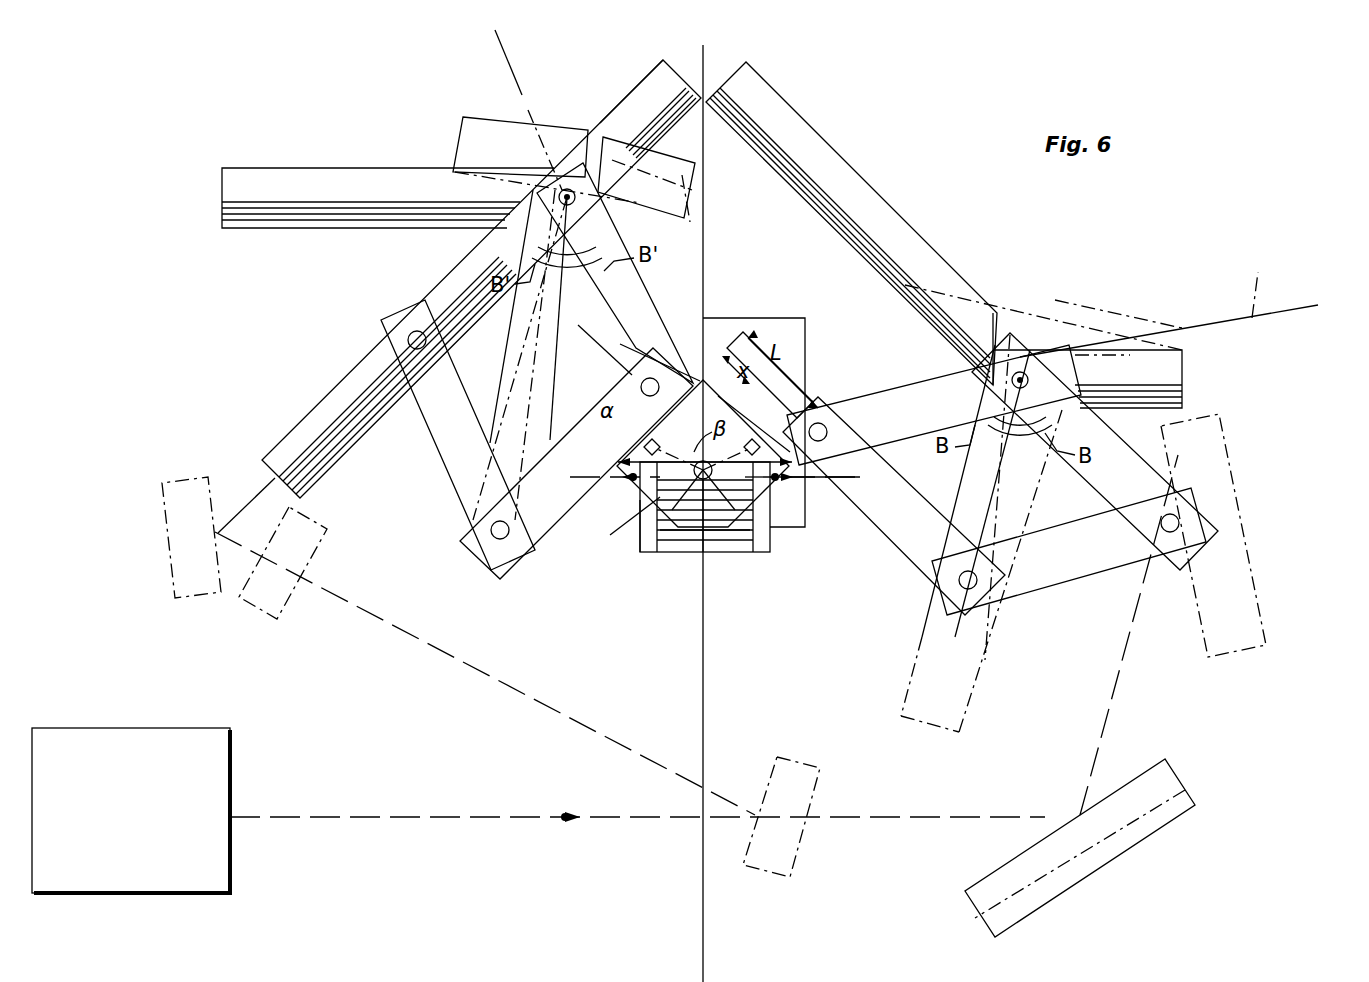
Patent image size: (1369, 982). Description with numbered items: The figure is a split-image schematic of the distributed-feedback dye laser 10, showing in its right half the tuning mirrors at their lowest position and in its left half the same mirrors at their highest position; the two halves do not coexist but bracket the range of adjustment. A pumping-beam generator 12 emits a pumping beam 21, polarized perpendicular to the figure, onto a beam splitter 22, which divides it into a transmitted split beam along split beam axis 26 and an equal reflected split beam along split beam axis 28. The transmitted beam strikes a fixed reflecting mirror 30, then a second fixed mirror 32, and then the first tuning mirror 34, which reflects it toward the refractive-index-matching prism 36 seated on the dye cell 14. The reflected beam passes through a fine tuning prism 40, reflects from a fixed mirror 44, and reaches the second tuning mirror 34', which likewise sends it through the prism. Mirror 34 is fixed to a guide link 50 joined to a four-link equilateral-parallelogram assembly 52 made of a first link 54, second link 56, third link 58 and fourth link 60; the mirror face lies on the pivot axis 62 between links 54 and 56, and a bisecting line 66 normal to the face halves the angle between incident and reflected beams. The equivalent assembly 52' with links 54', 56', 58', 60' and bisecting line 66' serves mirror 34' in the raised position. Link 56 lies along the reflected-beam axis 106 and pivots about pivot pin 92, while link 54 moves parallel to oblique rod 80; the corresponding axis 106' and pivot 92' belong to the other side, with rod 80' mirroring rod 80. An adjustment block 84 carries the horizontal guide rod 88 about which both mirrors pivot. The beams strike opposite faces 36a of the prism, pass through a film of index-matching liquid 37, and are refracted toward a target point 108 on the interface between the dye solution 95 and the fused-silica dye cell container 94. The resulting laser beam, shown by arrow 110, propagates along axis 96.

The distributed-feedback dye laser 10 is at (109, 206).
The pumping-beam generator 12 is at (124, 726).
The dye cell 14 is at (792, 596).
The pumping beam 21 is at (680, 815).
The beam splitter 22 is at (795, 868).
The split beam axis 26 is at (1115, 693).
The split beam axis 28 is at (448, 652).
The fixed reflecting mirror 30 is at (1122, 864).
The second fixed mirror 32 is at (1260, 614).
The first tuning mirror 34 is at (1043, 320).
The second tuning mirror 34' is at (549, 151).
The refractive-index-matching prism 36 is at (704, 377).
The prism face 36a is at (690, 367).
The film of index-matching liquid 37 is at (628, 482).
The fine tuning prism 40 is at (264, 612).
The fixed mirror 44 is at (172, 468).
The guide link 50 is at (990, 660).
The four-link equilateral-parallelogram assembly 52 is at (1157, 448).
The four-link assembly 52' is at (413, 298).
The first link 54 is at (1095, 451).
The first link 54' is at (481, 279).
The second link 56 is at (934, 391).
The second link 56' is at (615, 273).
The third link 58 is at (894, 506).
The third link 58' is at (576, 452).
The fourth link 60 is at (1069, 551).
The fourth link 60' is at (452, 435).
The pivot axis 62 is at (572, 185).
The bisecting line 66 is at (1031, 497).
The bisecting line 66' is at (539, 355).
The oblique rod 80 is at (851, 216).
The oblique rod 80' is at (648, 104).
The adjustment block 84 is at (701, 232).
The horizontal guide rod 88 is at (256, 174).
The pivot pin 92 is at (731, 511).
The pivot pin 92' is at (621, 519).
The dye cell container 94 is at (645, 547).
The dye solution 95 is at (682, 533).
The axis 96 is at (860, 479).
The axis 106 is at (1169, 308).
The axis 106' is at (534, 110).
The target point 108 is at (708, 501).
The laser beam arrow 110 is at (782, 480).